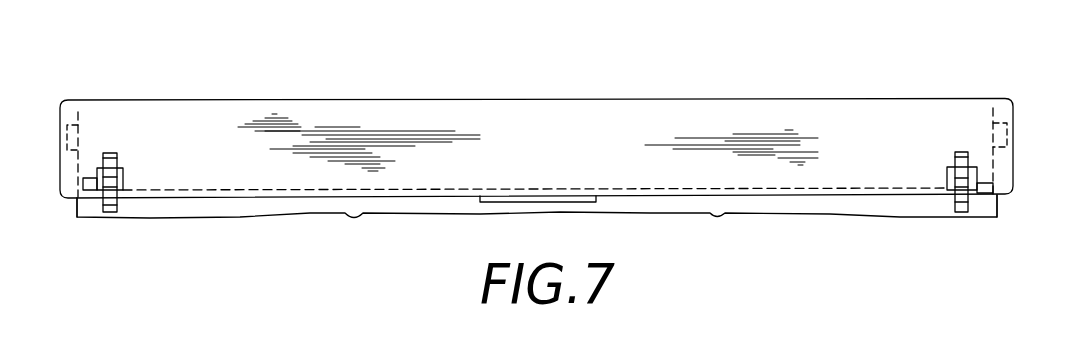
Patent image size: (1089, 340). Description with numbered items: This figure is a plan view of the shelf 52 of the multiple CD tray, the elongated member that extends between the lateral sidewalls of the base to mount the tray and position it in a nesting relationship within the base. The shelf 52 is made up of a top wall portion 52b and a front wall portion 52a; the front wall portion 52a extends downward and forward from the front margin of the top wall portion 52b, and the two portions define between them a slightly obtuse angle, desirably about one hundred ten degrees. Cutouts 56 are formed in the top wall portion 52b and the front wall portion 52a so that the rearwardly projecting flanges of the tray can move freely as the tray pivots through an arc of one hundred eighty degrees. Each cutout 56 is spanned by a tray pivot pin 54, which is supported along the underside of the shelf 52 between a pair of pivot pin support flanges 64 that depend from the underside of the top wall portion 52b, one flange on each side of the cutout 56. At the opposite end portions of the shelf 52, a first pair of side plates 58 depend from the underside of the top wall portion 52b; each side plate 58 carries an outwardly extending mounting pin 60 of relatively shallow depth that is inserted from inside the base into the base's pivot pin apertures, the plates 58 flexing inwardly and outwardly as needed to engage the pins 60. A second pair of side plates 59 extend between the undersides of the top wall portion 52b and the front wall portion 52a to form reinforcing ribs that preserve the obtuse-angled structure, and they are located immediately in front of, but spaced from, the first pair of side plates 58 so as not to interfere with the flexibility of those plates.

The shelf 52 is at (393, 100).
The front wall portion 52a is at (660, 202).
The top wall portion 52b is at (585, 127).
The tray pivot pin 54 is at (112, 182).
The cutout 56 is at (112, 166).
The first pair of side plates 58 is at (88, 117).
The second pair of side plates 59 is at (93, 197).
The mounting pin 60 is at (62, 140).
The pivot pin support flange 64 is at (123, 181).